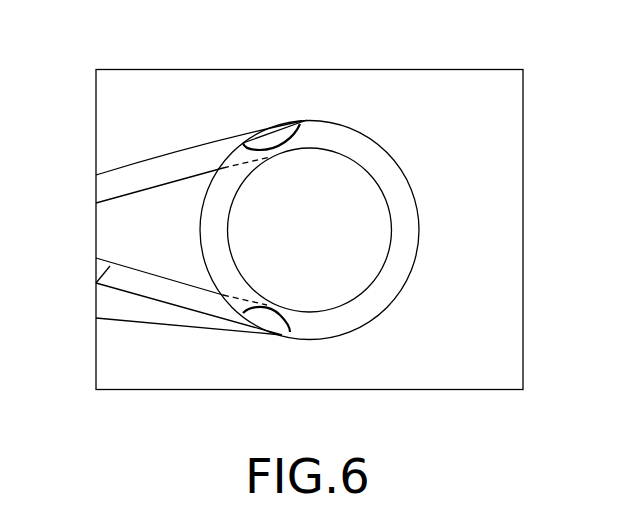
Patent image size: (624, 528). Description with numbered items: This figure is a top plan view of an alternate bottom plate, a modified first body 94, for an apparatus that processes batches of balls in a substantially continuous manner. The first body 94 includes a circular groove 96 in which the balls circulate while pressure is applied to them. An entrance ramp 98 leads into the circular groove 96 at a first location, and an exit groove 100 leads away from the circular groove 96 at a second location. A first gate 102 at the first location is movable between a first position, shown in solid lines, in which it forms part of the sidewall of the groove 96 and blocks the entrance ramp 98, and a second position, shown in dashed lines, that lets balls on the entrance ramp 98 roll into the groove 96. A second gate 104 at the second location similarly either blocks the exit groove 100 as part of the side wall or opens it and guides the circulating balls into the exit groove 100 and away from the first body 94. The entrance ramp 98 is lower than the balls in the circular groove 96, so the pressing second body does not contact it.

The first body 94 is at (493, 143).
The circular groove 96 is at (400, 263).
The entrance ramp 98 is at (143, 287).
The exit groove 100 is at (119, 172).
The first gate 102 is at (290, 332).
The second gate 104 is at (300, 124).